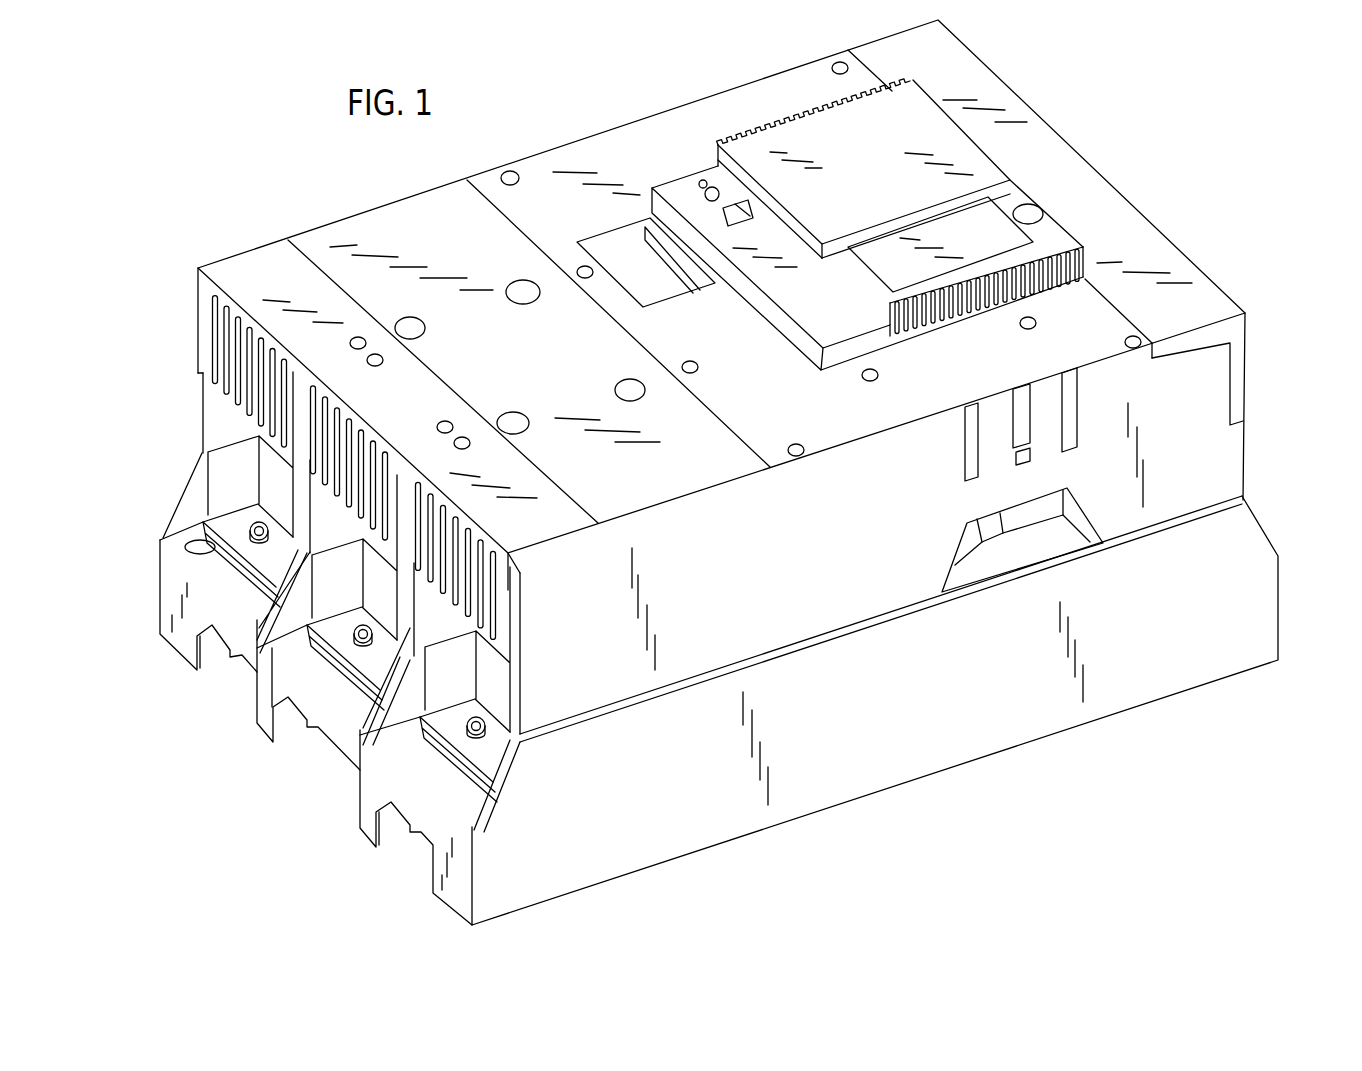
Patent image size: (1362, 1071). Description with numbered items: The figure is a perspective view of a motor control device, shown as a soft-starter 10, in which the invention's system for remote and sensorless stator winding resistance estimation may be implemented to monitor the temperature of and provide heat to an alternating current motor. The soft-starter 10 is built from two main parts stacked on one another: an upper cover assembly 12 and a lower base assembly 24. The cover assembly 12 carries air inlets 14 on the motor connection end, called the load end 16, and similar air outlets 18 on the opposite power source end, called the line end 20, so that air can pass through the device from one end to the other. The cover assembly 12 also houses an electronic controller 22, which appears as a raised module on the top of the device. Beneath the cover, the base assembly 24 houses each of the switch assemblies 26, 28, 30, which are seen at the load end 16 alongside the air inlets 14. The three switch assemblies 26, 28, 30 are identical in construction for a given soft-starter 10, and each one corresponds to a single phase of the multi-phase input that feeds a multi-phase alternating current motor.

The soft-starter 10 is at (1193, 108).
The cover assembly 12 is at (795, 573).
The air inlets 14 is at (218, 420).
The load end 16 is at (306, 795).
The air outlets 18 is at (1260, 370).
The line end 20 is at (1243, 685).
The electronic controller 22 is at (694, 148).
The base assembly 24 is at (880, 729).
The switch assembly 26 is at (497, 748).
The switch assembly 28 is at (365, 655).
The switch assembly 30 is at (258, 520).